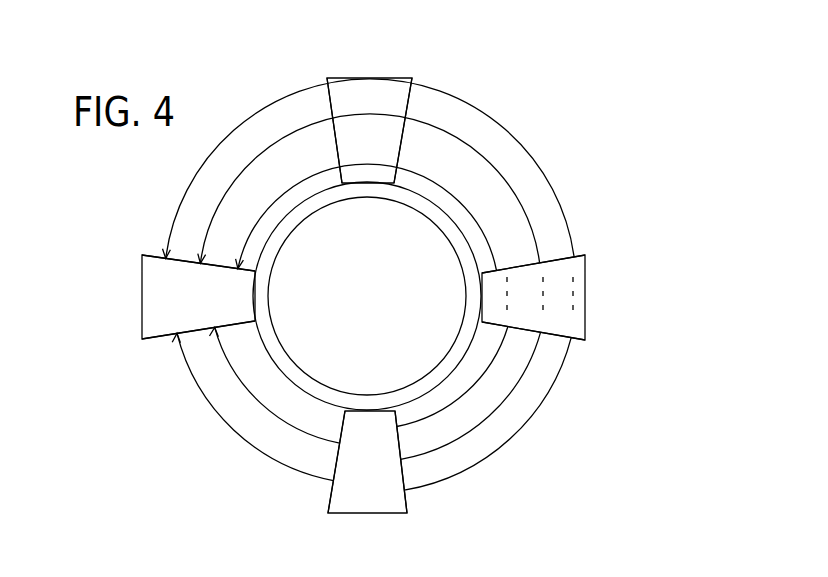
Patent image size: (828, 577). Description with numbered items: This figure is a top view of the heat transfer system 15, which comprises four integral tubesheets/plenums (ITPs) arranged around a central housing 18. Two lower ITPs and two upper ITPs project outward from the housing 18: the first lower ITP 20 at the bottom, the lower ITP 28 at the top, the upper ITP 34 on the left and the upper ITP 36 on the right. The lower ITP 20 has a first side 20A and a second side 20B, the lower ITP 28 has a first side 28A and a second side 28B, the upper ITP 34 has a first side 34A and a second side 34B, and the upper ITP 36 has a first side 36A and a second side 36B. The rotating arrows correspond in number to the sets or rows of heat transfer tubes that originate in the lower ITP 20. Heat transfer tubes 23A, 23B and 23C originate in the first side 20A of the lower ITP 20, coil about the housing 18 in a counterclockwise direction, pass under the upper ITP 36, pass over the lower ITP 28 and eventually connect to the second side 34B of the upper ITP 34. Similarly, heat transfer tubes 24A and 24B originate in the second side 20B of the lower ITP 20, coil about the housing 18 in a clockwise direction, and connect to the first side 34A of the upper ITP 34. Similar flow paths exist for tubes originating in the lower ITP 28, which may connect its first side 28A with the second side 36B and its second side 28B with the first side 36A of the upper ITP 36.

The heat transfer system 15 is at (558, 137).
The housing 18 is at (300, 353).
The first lower ITP 20 is at (367, 518).
The first side of lower ITP 20A is at (412, 505).
The second side of lower ITP 20B is at (325, 502).
The heat transfer tube 23A is at (478, 465).
The heat transfer tube 23B is at (493, 416).
The heat transfer tube 23C is at (495, 362).
The heat transfer tube 24A is at (240, 448).
The heat transfer tube 24B is at (235, 378).
The lower ITP 28 is at (363, 72).
The first side of lower ITP 28A is at (411, 94).
The second side of lower ITP 28B is at (326, 92).
The upper ITP 34 is at (140, 298).
The first side of upper ITP 34A is at (160, 343).
The second side of upper ITP 34B is at (152, 252).
The upper ITP 36 is at (588, 299).
The first side of upper ITP 36A is at (580, 345).
The second side of upper ITP 36B is at (582, 251).